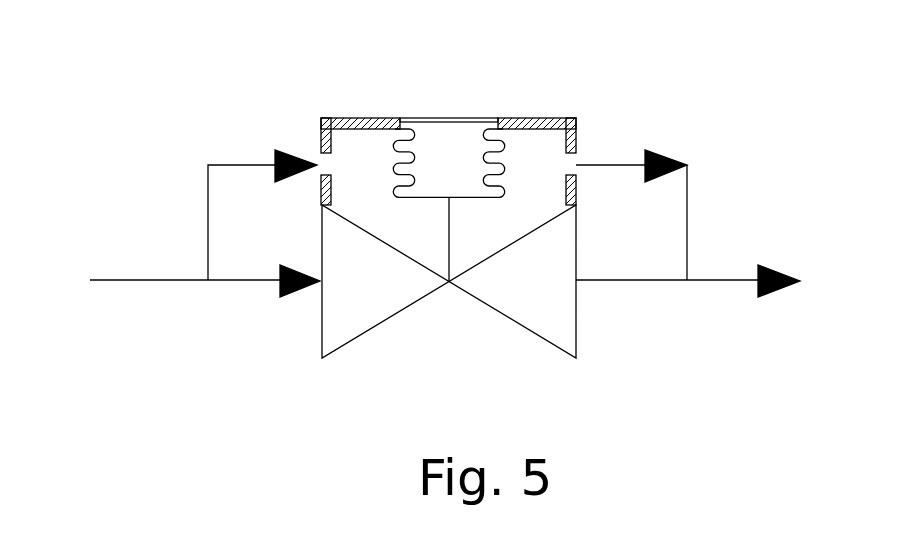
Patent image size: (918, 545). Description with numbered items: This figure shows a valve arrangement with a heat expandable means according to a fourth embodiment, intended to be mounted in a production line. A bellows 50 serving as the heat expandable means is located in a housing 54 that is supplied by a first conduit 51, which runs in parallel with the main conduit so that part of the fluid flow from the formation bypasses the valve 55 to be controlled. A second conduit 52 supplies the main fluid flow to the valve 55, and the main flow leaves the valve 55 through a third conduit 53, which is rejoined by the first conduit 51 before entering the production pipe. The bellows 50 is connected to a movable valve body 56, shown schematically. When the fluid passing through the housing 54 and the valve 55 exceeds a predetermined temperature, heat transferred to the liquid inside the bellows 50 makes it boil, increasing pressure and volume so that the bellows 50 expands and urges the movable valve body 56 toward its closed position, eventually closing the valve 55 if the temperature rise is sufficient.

The bellows 50 is at (481, 215).
The first conduit 51 is at (255, 163).
The second conduit 52 is at (242, 282).
The third conduit 53 is at (647, 282).
The housing 54 is at (538, 118).
The valve 55 is at (592, 341).
The movable valve body 56 is at (450, 316).